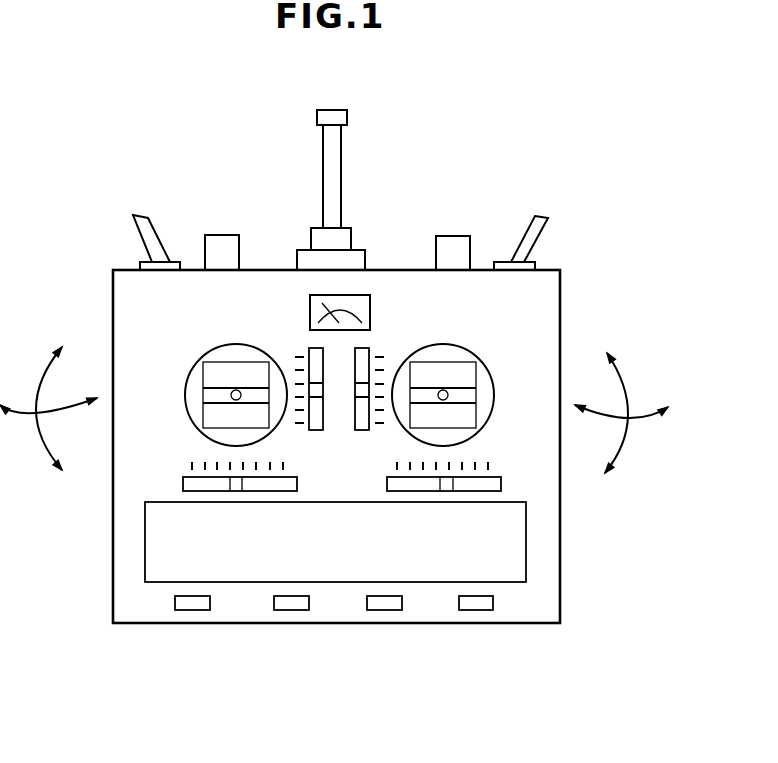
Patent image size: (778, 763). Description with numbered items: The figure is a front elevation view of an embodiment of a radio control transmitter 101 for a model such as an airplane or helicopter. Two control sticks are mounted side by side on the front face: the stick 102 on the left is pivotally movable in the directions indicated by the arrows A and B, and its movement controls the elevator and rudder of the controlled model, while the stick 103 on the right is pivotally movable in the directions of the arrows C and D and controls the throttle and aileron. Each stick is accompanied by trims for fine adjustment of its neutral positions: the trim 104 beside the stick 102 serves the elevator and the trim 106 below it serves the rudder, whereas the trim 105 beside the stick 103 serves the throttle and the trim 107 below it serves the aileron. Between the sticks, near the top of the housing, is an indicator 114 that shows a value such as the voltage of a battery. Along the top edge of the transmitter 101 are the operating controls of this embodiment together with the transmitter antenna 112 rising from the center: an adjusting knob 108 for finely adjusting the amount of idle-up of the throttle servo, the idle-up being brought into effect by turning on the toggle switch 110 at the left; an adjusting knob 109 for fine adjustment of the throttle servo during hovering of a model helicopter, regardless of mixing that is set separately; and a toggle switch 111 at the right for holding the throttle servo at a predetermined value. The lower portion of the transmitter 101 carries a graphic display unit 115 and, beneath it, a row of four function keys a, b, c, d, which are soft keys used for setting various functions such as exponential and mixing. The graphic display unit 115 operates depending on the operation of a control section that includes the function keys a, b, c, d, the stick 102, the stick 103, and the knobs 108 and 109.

The radio control transmitter 101 is at (113, 540).
The stick 102 is at (233, 392).
The stick 103 is at (446, 392).
The trim 104 is at (313, 388).
The trim 105 is at (364, 388).
The trim 106 is at (238, 486).
The trim 107 is at (446, 486).
The adjusting knob 108 is at (226, 235).
The adjusting knob 109 is at (448, 236).
The toggle switch 110 is at (140, 213).
The toggle switch 111 is at (538, 215).
The transmitter antenna 112 is at (344, 160).
The indicator 114 is at (362, 293).
The graphic display unit 115 is at (540, 548).
The function key a is at (193, 612).
The function key b is at (292, 612).
The function key c is at (385, 612).
The function key d is at (478, 612).
The arrow direction A is at (57, 396).
The arrow direction B is at (48, 420).
The arrow direction C is at (615, 399).
The arrow direction D is at (622, 425).